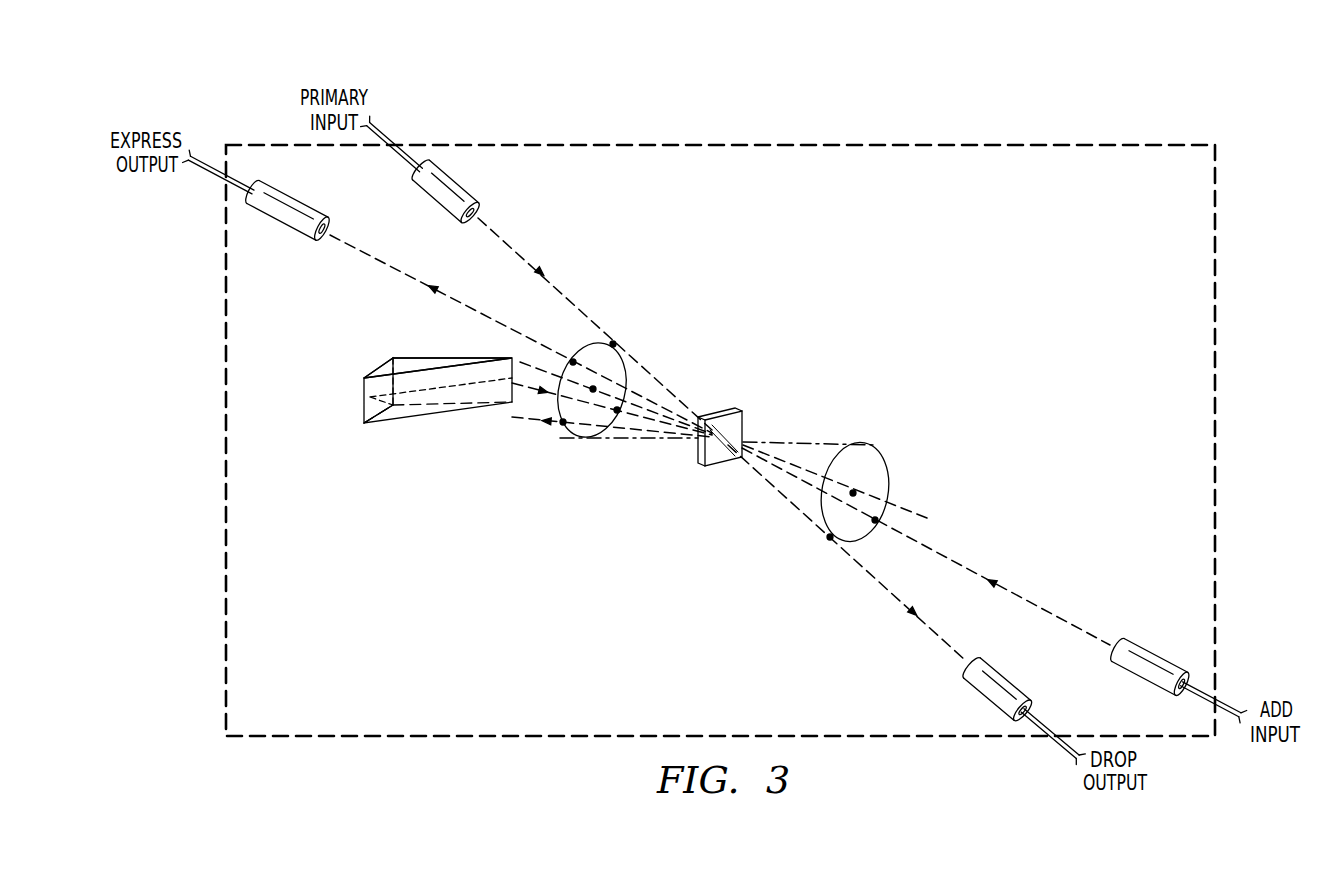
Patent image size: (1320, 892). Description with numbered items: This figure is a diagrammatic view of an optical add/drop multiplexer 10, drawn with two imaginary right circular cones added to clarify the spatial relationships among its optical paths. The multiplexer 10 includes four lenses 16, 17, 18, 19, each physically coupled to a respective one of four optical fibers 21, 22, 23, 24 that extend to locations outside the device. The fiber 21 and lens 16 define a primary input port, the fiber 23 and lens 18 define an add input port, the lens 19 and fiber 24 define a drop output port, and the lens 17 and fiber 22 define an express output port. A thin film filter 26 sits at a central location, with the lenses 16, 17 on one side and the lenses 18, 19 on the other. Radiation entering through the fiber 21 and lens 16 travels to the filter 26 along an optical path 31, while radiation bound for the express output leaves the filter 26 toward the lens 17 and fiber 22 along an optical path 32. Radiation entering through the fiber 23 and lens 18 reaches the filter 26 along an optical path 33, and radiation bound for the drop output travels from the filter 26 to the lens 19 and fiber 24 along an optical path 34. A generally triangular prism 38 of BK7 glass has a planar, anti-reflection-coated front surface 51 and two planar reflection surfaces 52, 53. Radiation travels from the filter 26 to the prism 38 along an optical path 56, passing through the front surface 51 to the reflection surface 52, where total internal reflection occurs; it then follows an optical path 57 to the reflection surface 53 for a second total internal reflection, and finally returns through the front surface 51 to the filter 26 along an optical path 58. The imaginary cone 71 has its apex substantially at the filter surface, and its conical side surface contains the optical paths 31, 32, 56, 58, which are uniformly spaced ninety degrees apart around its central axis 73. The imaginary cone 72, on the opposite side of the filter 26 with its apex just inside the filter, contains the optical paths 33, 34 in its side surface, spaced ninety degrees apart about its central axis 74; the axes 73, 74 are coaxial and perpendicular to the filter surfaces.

The optical add/drop multiplexer 10 is at (966, 116).
The lens 16 is at (434, 195).
The lens 17 is at (288, 217).
The lens 18 is at (1153, 653).
The lens 19 is at (987, 690).
The optical fiber 21 is at (388, 132).
The optical fiber 22 is at (212, 183).
The optical fiber 23 is at (1227, 698).
The optical fiber 24 is at (1045, 717).
The thin film filter 26 is at (722, 418).
The optical path 31 is at (505, 247).
The optical path 32 is at (372, 258).
The optical path 33 is at (1060, 618).
The optical path 34 is at (937, 638).
The prism 38 is at (362, 405).
The front surface 51 is at (415, 369).
The reflection surface 52 is at (384, 366).
The reflection surface 53 is at (413, 358).
The optical path 56 is at (500, 415).
The optical path 57 is at (461, 382).
The optical path 58 is at (518, 388).
The imaginary right circular cone 71 is at (645, 440).
The imaginary right circular cone 72 is at (797, 440).
The central axis 73 is at (545, 370).
The central axis 74 is at (905, 513).